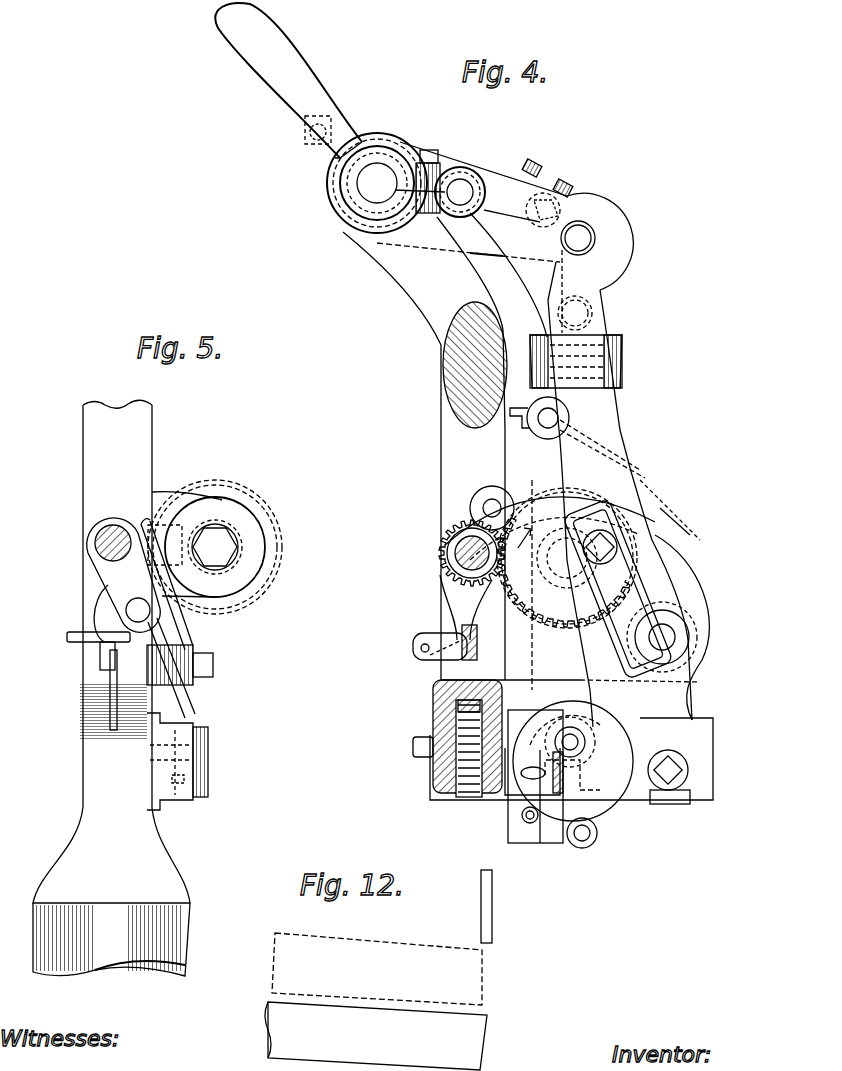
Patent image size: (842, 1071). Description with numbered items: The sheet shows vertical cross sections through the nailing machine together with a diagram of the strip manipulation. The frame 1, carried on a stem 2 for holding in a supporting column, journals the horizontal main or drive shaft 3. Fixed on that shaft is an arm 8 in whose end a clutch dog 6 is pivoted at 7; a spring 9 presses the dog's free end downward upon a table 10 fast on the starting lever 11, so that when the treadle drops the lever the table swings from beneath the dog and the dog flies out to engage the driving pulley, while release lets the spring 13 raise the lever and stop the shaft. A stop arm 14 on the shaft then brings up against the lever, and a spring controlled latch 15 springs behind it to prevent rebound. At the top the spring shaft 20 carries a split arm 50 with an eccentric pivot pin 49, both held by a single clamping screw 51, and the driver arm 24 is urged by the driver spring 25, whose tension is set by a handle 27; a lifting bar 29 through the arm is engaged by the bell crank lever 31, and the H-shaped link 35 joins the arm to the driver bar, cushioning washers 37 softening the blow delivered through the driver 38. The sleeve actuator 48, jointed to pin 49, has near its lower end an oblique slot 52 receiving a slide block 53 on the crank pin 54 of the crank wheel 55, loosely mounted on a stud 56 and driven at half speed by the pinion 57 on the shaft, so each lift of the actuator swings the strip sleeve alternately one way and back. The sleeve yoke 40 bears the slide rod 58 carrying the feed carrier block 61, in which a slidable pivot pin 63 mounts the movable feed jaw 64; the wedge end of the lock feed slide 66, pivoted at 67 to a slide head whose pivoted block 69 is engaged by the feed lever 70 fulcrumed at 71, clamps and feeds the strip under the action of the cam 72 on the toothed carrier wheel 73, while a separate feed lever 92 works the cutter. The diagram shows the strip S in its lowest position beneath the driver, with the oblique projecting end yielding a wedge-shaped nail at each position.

In FIG. 4, the frame 1 is at (428, 292).
In FIG. 5, the frame 1 is at (111, 651).
In FIG. 5, the stem 2 is at (178, 930).
In FIG. 4, the main or drive shaft 3 is at (458, 545).
In FIG. 5, the main or drive shaft 3 is at (105, 540).
In FIG. 5, the clutch dog 6 is at (100, 615).
In FIG. 5, the pivot 7 is at (145, 617).
In FIG. 5, the arm 8 is at (105, 572).
In FIG. 5, the spring 9 is at (155, 576).
In FIG. 5, the table 10 is at (95, 643).
In FIG. 5, the starting lever 11 is at (110, 712).
In FIG. 4, the spring 13 is at (460, 745).
In FIG. 4, the stop arm 14 is at (455, 614).
In FIG. 4, the spring controlled latch 15 is at (440, 634).
In FIG. 4, the spring shaft 20 is at (368, 181).
In FIG. 4, the driver arm 24 is at (598, 237).
In FIG. 4, the driver spring 25 is at (388, 140).
In FIG. 4, the handle 27 is at (243, 62).
In FIG. 4, the lifting bar 29 is at (560, 212).
In FIG. 4, the bell crank lever 31 is at (525, 176).
In FIG. 4, the H-shaped link 35 is at (587, 270).
In FIG. 4, the cushioning washers 37 is at (612, 366).
In FIG. 12, the driver 38 is at (492, 888).
In FIG. 4, the sleeve yoke 40 is at (598, 792).
In FIG. 4, the sleeve actuator 48 is at (622, 445).
In FIG. 4, the pivot pin 49 is at (462, 190).
In FIG. 4, the split arm 50 is at (362, 205).
In FIG. 4, the clamping screw 51 is at (435, 152).
In FIG. 4, the oblique slot 52 is at (648, 613).
In FIG. 4, the slide block 53 is at (592, 538).
In FIG. 4, the crank pin 54 is at (612, 548).
In FIG. 4, the crank wheel 55 is at (557, 615).
In FIG. 4, the stud 56 is at (556, 560).
In FIG. 4, the pinion 57 is at (440, 550).
In FIG. 4, the slide rod 58 is at (527, 820).
In FIG. 4, the feed carrier block 61 is at (538, 838).
In FIG. 4, the slidable pivot pin 63 is at (530, 776).
In FIG. 4, the movable feed jaw 64 is at (560, 748).
In FIG. 4, the lock feed slide 66 is at (562, 792).
In FIG. 5, the lock feed slide 66 is at (205, 773).
In FIG. 5, the pivot 67 is at (208, 724).
In FIG. 5, the pivoted block 69 is at (182, 784).
In FIG. 5, the feed lever 70 is at (187, 702).
In FIG. 5, the fulcrum 71 is at (205, 670).
In FIG. 5, the cam 72 is at (230, 513).
In FIG. 5, the toothed carrier wheel 73 is at (270, 555).
In FIG. 4, the feed lever 92 is at (677, 553).
In FIG. 4, the strip S is at (582, 790).
In FIG. 12, the strip S is at (376, 1001).